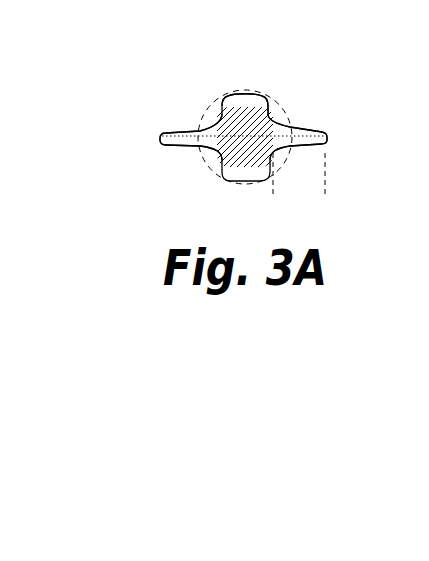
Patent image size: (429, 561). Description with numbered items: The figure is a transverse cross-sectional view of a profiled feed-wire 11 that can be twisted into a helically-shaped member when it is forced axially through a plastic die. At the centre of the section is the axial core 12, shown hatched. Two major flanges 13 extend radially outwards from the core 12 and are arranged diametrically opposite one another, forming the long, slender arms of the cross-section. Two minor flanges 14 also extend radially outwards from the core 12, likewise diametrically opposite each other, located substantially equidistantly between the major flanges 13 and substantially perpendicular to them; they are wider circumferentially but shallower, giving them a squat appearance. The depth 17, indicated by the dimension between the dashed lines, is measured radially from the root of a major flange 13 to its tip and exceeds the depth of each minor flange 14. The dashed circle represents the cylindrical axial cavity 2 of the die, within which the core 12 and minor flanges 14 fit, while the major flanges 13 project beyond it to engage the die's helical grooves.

The cylindrical axial cavity 2 is at (197, 157).
The feed-wire 11 is at (212, 111).
The axial core 12 is at (240, 140).
The major flange 13 is at (172, 123).
The minor flange 14 is at (272, 105).
The depth 17 is at (325, 193).